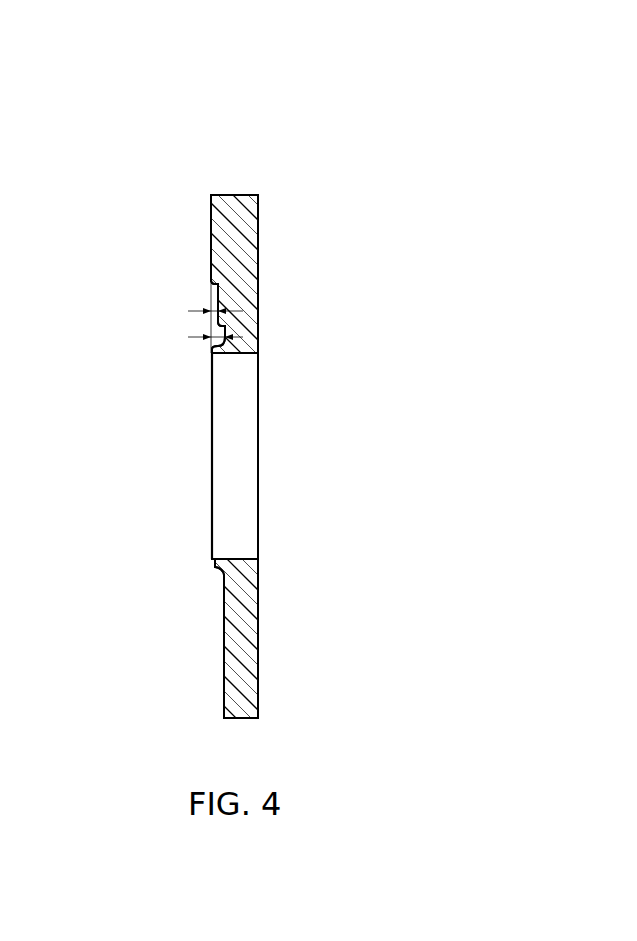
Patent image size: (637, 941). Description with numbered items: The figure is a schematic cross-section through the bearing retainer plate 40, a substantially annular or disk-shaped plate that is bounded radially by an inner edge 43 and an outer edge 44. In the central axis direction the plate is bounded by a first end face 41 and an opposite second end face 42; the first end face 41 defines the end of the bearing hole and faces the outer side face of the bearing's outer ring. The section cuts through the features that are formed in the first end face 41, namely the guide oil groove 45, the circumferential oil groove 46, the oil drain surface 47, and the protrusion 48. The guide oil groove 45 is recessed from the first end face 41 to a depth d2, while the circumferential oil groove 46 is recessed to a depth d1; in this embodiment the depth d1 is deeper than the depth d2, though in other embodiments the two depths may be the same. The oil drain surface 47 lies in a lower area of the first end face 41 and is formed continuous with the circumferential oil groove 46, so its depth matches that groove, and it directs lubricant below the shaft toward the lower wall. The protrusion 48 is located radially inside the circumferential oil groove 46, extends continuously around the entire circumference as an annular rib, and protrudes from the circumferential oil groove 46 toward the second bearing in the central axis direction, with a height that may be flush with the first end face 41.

The bearing retainer plate 40 is at (67, 71).
The first end face 41 is at (210, 240).
The second end face 42 is at (262, 242).
The inner edge 43 is at (243, 558).
The outer edge 44 is at (233, 193).
The guide oil groove 45 is at (212, 288).
The circumferential oil groove 46 is at (227, 332).
The oil drain surface 47 is at (225, 642).
The protrusion 48 is at (218, 350).
The depth of the circumferential oil groove d1 is at (201, 340).
The depth of the guide oil groove d2 is at (201, 318).